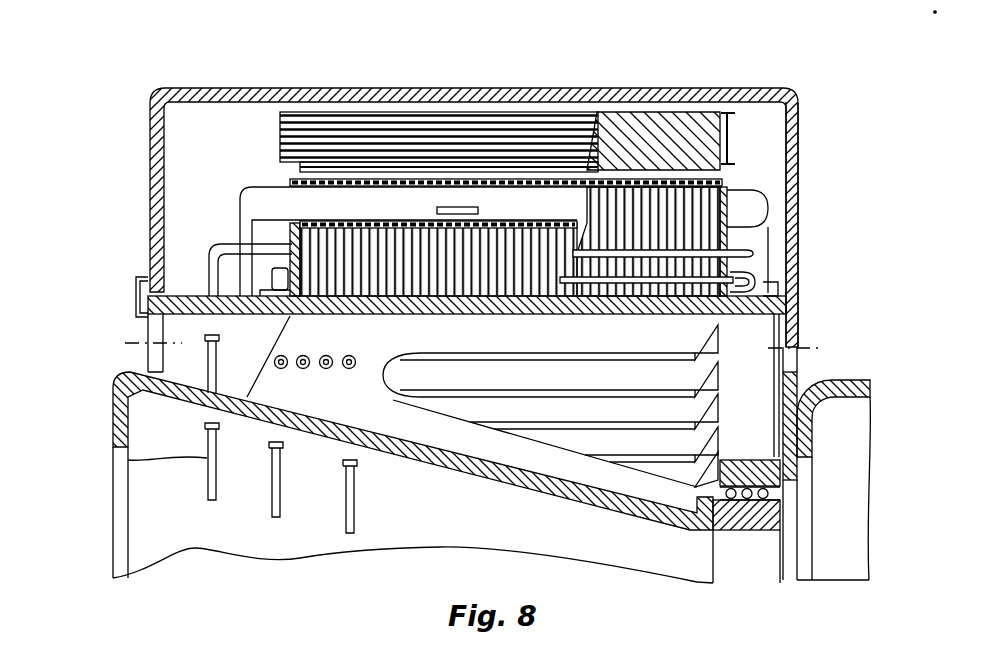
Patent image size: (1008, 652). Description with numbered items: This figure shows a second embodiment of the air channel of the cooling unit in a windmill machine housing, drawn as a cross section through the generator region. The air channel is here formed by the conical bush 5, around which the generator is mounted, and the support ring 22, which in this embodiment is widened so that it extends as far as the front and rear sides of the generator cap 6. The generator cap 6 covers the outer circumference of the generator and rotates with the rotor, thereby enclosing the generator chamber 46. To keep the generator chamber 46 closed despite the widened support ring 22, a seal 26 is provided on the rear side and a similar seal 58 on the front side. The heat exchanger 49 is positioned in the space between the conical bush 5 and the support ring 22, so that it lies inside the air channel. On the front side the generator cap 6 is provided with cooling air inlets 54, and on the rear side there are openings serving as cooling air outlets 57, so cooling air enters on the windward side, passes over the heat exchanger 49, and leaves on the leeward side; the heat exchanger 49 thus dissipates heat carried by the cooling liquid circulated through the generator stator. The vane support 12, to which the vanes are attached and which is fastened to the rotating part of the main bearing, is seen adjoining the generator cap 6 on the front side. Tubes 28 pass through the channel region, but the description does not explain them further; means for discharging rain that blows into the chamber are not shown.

The generator chamber 46 is at (199, 137).
The generator cap 6 is at (792, 177).
The tube 28 is at (205, 255).
The seal 26 is at (124, 290).
The seal 58 is at (790, 257).
The support ring 22 is at (428, 318).
The cooling air outlet 57 is at (150, 350).
The cooling air inlet 54 is at (797, 333).
The vane support 12 is at (850, 380).
The heat exchanger 49 is at (281, 369).
The conical bush 5 is at (438, 462).